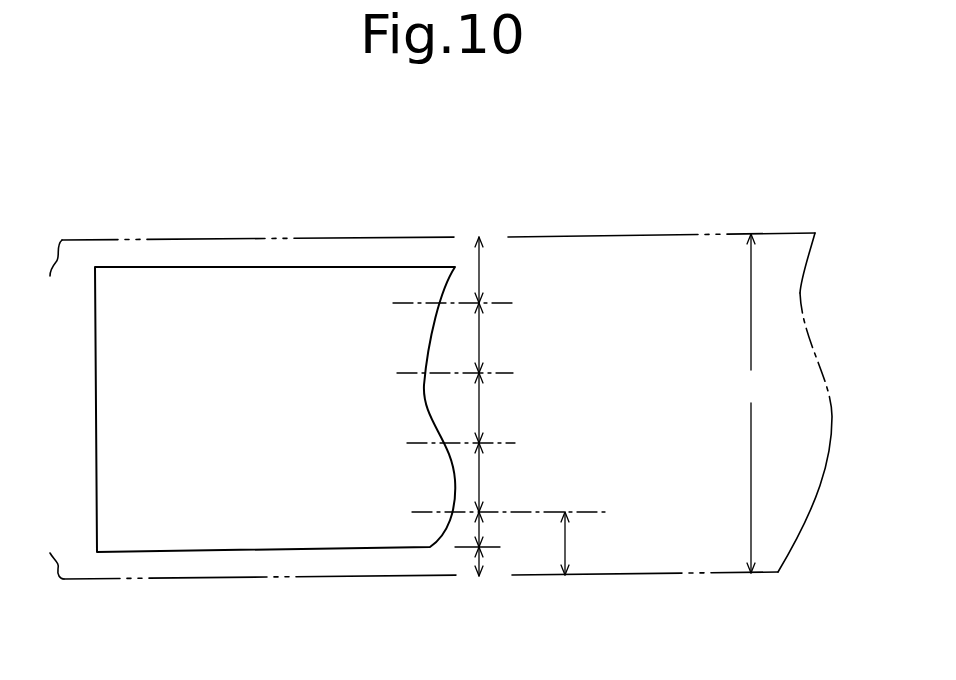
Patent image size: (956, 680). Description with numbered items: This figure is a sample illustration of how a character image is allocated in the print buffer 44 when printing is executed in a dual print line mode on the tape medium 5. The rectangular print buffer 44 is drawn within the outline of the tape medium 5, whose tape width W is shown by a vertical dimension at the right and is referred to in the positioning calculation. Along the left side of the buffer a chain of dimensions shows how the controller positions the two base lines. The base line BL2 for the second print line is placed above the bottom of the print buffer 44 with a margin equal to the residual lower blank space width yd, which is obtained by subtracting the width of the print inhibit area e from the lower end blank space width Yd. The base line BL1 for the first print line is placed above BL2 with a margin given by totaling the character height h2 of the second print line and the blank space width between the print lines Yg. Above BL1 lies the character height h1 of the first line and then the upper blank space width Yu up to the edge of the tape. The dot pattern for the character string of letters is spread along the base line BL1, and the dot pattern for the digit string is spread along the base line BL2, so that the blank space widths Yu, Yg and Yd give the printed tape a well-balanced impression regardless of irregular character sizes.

The print buffer 44 is at (327, 265).
The tape medium 5 is at (567, 232).
The base line for the first print line BL1 is at (512, 373).
The base line for the second print line BL2 is at (560, 512).
The upper blank space width Yu is at (481, 268).
The character height for the first print line h1 is at (481, 345).
The blank space width between the print lines Yg is at (481, 420).
The character height for the second print line h2 is at (481, 480).
The residual lower blank space width yd is at (481, 527).
The print inhibit area e is at (482, 572).
The lower end blank space width Yd is at (566, 548).
The tape width W is at (753, 403).